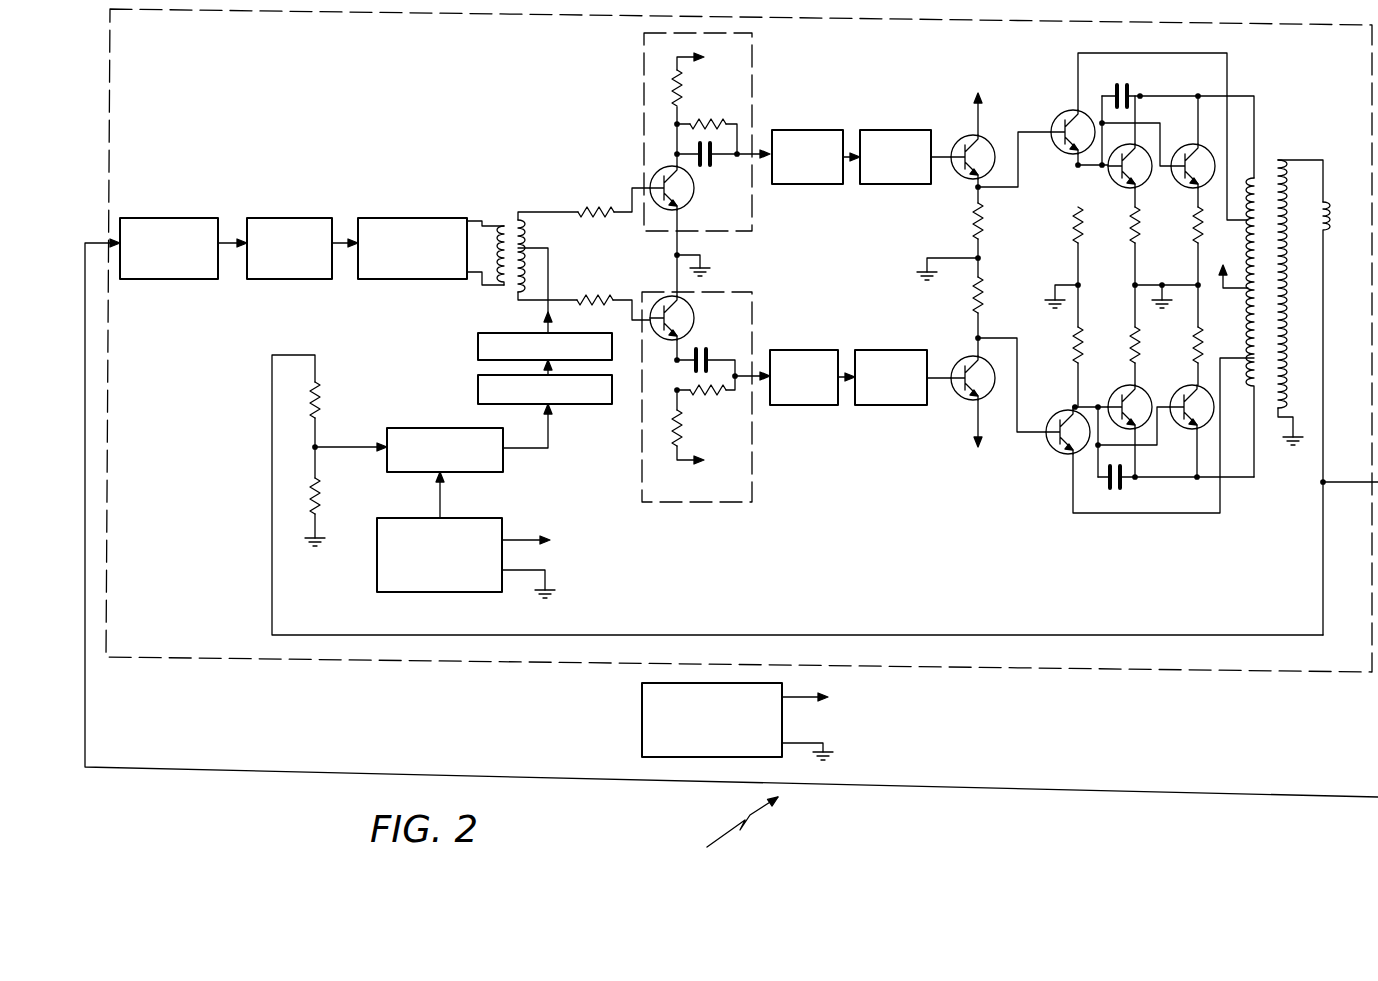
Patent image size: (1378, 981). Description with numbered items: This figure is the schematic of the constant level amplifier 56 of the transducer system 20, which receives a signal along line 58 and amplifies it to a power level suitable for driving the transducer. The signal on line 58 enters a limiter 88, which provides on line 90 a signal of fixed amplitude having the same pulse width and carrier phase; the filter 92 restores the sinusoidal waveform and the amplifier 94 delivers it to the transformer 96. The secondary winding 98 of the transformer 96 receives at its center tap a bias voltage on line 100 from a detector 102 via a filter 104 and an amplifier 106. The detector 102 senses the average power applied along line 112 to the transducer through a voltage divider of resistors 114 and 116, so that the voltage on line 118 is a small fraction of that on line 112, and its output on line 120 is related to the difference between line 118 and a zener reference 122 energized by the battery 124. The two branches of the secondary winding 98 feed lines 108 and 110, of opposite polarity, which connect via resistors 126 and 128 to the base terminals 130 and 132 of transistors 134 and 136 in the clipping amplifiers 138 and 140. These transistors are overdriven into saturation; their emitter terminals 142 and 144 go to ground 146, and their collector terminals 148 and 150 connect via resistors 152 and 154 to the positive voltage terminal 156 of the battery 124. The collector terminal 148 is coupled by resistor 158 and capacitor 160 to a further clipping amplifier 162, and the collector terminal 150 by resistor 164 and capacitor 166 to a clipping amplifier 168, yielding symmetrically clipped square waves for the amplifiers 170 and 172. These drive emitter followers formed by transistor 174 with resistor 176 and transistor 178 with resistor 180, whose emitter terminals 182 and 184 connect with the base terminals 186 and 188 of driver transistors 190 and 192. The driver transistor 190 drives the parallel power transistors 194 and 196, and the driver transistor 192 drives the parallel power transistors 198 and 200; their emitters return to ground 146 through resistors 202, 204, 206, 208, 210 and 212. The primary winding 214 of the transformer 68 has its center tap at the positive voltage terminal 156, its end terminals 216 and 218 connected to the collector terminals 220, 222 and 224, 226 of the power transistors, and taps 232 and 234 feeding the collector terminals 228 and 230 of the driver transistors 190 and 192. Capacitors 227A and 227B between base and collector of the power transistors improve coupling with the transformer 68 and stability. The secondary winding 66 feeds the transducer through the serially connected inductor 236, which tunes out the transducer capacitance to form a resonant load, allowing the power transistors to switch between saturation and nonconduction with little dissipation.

The transducer system 20 is at (725, 831).
The amplifier 56 is at (110, 44).
The line 58 is at (1188, 792).
The secondary winding 66 is at (1280, 285).
The transformer 68 is at (1275, 410).
The limiter 88 is at (178, 218).
The line 90 is at (230, 242).
The filter 92 is at (290, 218).
The amplifier 94 is at (392, 218).
The transformer 96 is at (510, 220).
The secondary winding 98 is at (523, 224).
The line 100 is at (552, 250).
The detector 102 is at (503, 460).
The filter 104 is at (478, 388).
The amplifier 106 is at (478, 343).
The line 108 is at (523, 220).
The line 110 is at (516, 298).
The line 112 is at (1338, 482).
The resistor 114 is at (324, 404).
The resistor 116 is at (321, 500).
The line 118 is at (347, 447).
The line 120 is at (548, 428).
The reference 122 is at (408, 518).
The battery 124 is at (642, 711).
The resistor 126 is at (596, 206).
The resistor 128 is at (598, 296).
The base terminal 130 is at (653, 183).
The base terminal 132 is at (647, 326).
The transistor 134 is at (695, 197).
The transistor 136 is at (690, 303).
The clipping amplifier 138 is at (754, 41).
The clipping amplifier 140 is at (760, 470).
The emitter terminal 142 is at (677, 222).
The emitter terminal 144 is at (674, 294).
The ground 146 is at (701, 254).
The collector terminal 148 is at (690, 160).
The collector terminal 150 is at (694, 349).
The resistor 152 is at (687, 73).
The resistor 154 is at (673, 437).
The positive voltage terminal 156 is at (797, 697).
The resistor 158 is at (735, 122).
The capacitor 160 is at (694, 139).
The clipping amplifier 162 is at (832, 130).
The resistor 164 is at (703, 398).
The capacitor 166 is at (740, 365).
The clipping amplifier 168 is at (822, 350).
The amplifier 170 is at (898, 130).
The amplifier 172 is at (887, 350).
The transistor 174 is at (993, 132).
The resistor 176 is at (974, 222).
The transistor 178 is at (965, 401).
The resistor 180 is at (986, 295).
The emitter terminal 182 is at (977, 188).
The emitter terminal 184 is at (977, 338).
The base terminal 186 is at (1057, 120).
The base terminal 188 is at (1050, 428).
The driver transistor 190 is at (1085, 115).
The driver transistor 192 is at (1073, 452).
The power transistor 194 is at (1106, 170).
The power transistor 196 is at (1213, 148).
The power transistor 198 is at (1167, 381).
The power transistor 200 is at (1192, 418).
The resistor 202 is at (1073, 221).
The resistor 204 is at (1075, 343).
The resistor 206 is at (1132, 223).
The resistor 208 is at (1193, 222).
The resistor 210 is at (1132, 344).
The resistor 212 is at (1195, 348).
The primary winding 214 is at (1250, 302).
The end terminal 216 is at (1256, 177).
The end terminal 218 is at (1253, 403).
The collector terminal 220 is at (1133, 153).
The collector terminal 222 is at (1197, 153).
The collector terminal 224 is at (1122, 427).
The collector terminal 226 is at (1190, 418).
The capacitor 227A is at (1127, 85).
The capacitor 227B is at (1118, 486).
The collector terminal 228 is at (1078, 112).
The collector terminal 230 is at (1077, 478).
The tap 232 is at (1250, 220).
The tap 234 is at (1247, 358).
The inductor 236 is at (1327, 198).